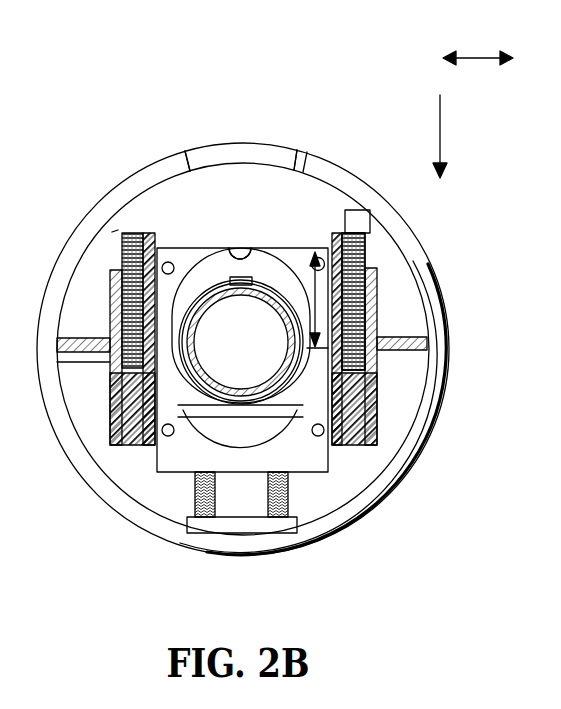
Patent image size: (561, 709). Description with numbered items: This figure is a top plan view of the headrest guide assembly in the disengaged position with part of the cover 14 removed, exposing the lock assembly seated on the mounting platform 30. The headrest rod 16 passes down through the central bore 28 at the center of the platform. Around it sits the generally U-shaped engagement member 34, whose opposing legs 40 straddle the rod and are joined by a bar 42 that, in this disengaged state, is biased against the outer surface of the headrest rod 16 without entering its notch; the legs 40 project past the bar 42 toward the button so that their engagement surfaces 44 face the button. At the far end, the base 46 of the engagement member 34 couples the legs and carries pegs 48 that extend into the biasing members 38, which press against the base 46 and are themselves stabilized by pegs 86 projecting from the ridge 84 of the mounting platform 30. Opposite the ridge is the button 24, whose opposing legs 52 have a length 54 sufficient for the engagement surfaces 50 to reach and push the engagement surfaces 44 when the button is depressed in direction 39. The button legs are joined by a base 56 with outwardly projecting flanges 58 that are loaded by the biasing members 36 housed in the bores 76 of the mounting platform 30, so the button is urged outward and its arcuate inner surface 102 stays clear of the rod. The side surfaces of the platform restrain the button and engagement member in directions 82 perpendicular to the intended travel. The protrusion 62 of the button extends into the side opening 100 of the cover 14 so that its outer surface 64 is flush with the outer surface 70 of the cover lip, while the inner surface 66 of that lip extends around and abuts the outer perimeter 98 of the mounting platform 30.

The cover 14 is at (101, 500).
The headrest rod 16 is at (346, 232).
The button 24 is at (118, 230).
The central bore 28 is at (229, 250).
The mounting platform 30 is at (355, 462).
The engagement member 34 is at (366, 481).
The biasing members 36 is at (123, 263).
The biasing members 38 is at (230, 530).
The direction 39 is at (443, 133).
The opposing legs 40 is at (118, 470).
The bar 42 is at (300, 527).
The engagement surfaces 44 is at (110, 417).
The base 46 is at (197, 480).
The pegs 48 is at (193, 500).
The engagement surfaces 50 is at (100, 352).
The opposing legs 52 is at (110, 310).
The length 54 is at (364, 258).
The base 56 is at (297, 150).
The flanges 58 is at (143, 222).
The protrusion 62 is at (267, 202).
The outer surface 64 is at (211, 132).
The inner surface 66 is at (145, 483).
The outer surface 70 is at (154, 153).
The bores 76 is at (316, 305).
The directions 82 is at (480, 50).
The ridge 84 is at (240, 517).
The pegs 86 is at (214, 533).
The outer perimeter 98 is at (447, 397).
The side opening 100 is at (262, 275).
The inner surface 102 is at (250, 247).